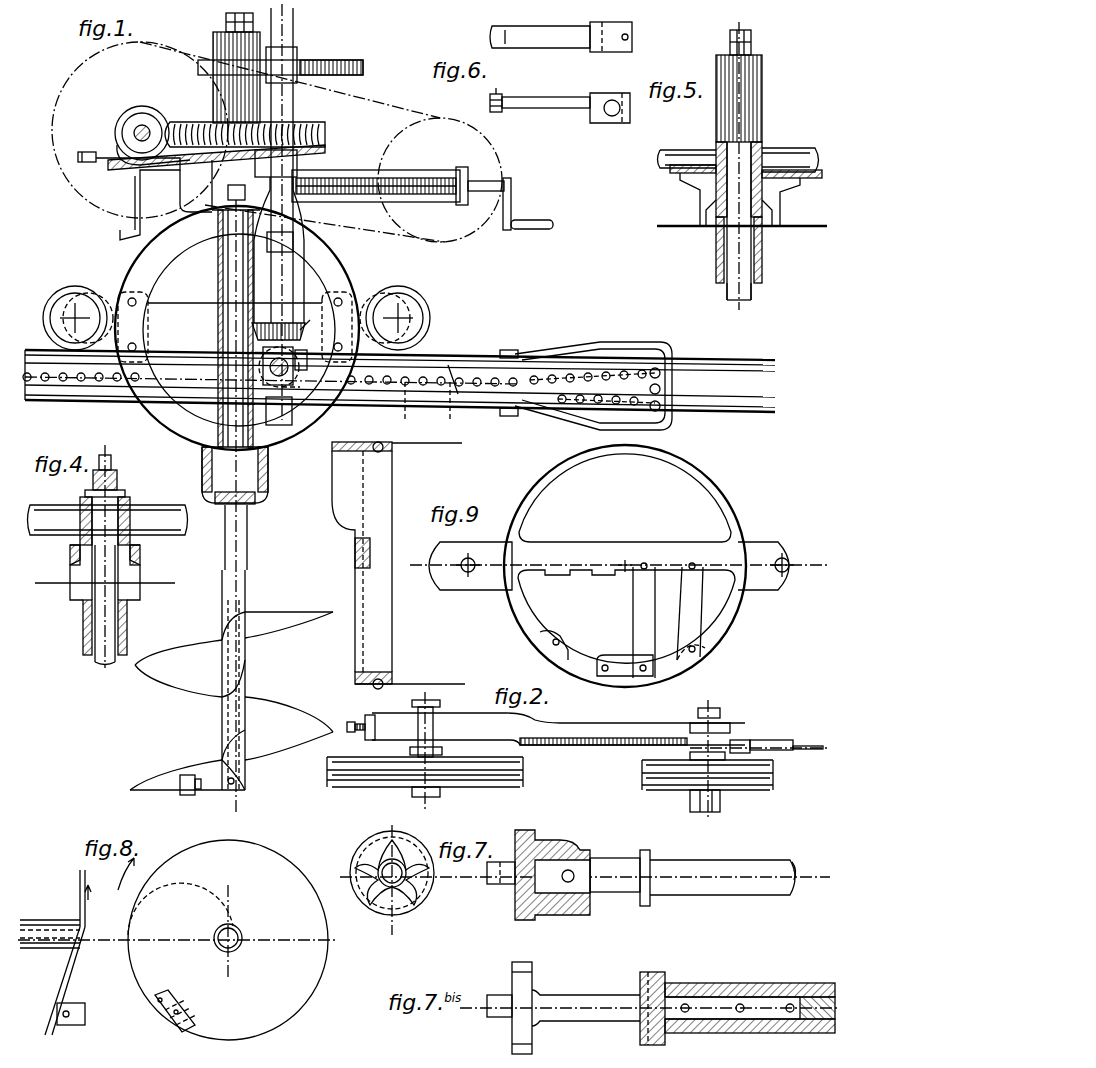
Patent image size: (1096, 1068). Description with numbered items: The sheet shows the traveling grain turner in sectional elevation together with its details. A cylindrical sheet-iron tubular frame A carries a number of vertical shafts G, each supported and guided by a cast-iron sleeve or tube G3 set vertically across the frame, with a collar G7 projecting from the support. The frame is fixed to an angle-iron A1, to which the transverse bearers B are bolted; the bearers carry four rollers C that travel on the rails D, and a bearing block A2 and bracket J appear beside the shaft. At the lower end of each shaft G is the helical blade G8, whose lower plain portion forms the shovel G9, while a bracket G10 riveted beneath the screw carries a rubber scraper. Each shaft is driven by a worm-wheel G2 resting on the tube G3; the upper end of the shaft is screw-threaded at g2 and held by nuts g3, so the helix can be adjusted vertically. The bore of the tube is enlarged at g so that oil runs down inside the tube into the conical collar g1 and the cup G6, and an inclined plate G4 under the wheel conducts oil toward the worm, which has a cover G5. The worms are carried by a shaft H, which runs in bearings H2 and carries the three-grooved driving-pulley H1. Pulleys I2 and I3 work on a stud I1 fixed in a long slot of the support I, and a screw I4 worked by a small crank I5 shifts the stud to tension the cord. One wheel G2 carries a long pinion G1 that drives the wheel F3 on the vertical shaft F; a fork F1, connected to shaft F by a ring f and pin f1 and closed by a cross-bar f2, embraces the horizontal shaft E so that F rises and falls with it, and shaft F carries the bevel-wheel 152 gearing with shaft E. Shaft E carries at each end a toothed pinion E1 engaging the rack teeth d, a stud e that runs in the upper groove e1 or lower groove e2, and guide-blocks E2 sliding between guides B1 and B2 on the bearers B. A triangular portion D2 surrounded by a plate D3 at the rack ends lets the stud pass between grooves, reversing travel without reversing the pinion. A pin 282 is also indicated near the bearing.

In FIG. 1, the tubular frame A is at (237, 328).
In FIG. 5, the tubular frame A is at (742, 217).
In FIG. 9, the tubular frame A is at (398, 565).
In FIG. 1, the angle-iron A1 is at (235, 305).
In FIG. 9, the angle-iron A1 is at (362, 561).
In FIG. 1, the bearing block A2 is at (291, 411).
In FIG. 1, the transverse bars or bearers B is at (270, 330).
In FIG. 9, the transverse bars or bearers B is at (355, 560).
In FIG. 9, the guide B1 is at (644, 620).
In FIG. 9, the guide B2 is at (690, 611).
In FIG. 1, the rollers C is at (236, 310).
In FIG. 1, the rails D is at (399, 371).
In FIG. 1, the triangular portion D2 is at (595, 389).
In FIG. 1, the plate D3 is at (593, 376).
In FIG. 1, the rack teeth d is at (428, 408).
In FIG. 7, the horizontal shaft E is at (679, 873).
In FIG. 7bis, the horizontal shaft E is at (750, 995).
In FIG. 1, the toothed pinion E1 is at (305, 362).
In FIG. 7, the toothed pinion E1 is at (470, 866).
In FIG. 7bis, the toothed pinion E1 is at (576, 996).
In FIG. 7bis, the guide-blocks E2 is at (653, 996).
In FIG. 7, the stud or pin e is at (495, 880).
In FIG. 7bis, the stud or pin e is at (487, 1018).
In FIG. 1, the upper groove e1 is at (480, 362).
In FIG. 1, the lower groove e2 is at (490, 410).
In FIG. 1, the vertical shaft F is at (281, 212).
In FIG. 1, the pin or fork F1 is at (320, 342).
In FIG. 6, the pin or fork F1 is at (561, 72).
In FIG. 1, the wheel F3 is at (289, 72).
In FIG. 6, the ring f is at (500, 82).
In FIG. 6, the pin f1 is at (490, 103).
In FIG. 6, the cross-bar f2 is at (628, 37).
In FIG. 1, the vertical shaft G is at (234, 506).
In FIG. 5, the vertical shaft G is at (739, 278).
In FIG. 8, the vertical shaft G is at (234, 942).
In FIG. 1, the long pinion G1 is at (228, 68).
In FIG. 5, the long pinion G1 is at (752, 86).
In FIG. 1, the worm-wheel G2 is at (245, 126).
In FIG. 4, the worm-wheel G2 is at (108, 543).
In FIG. 5, the worm-wheel G2 is at (738, 210).
In FIG. 1, the sleeve or tube G3 is at (222, 278).
In FIG. 4, the sleeve or tube G3 is at (114, 605).
In FIG. 5, the sleeve or tube G3 is at (746, 250).
In FIG. 1, the plate G4 is at (228, 154).
In FIG. 5, the plate G4 is at (746, 195).
In FIG. 1, the cover G5 is at (152, 123).
In FIG. 1, the cup G6 is at (266, 492).
In FIG. 1, the collar G7 is at (268, 462).
In FIG. 1, the helical blade G8 is at (258, 610).
In FIG. 8, the helical blade G8 is at (45, 1035).
In FIG. 8, the shovel G9 is at (126, 909).
In FIG. 1, the bracket G10 is at (188, 795).
In FIG. 8, the bracket G10 is at (141, 1011).
In FIG. 4, the enlarged bore g is at (105, 576).
In FIG. 5, the enlarged bore g is at (716, 206).
In FIG. 1, the collar g1 is at (202, 464).
In FIG. 4, the screw-thread g2 is at (112, 462).
In FIG. 4, the nuts g3 is at (93, 486).
In FIG. 2, the worm-shaft H is at (426, 751).
In FIG. 1, the driving-pulley H1 is at (276, 142).
In FIG. 2, the driving-pulley H1 is at (425, 782).
In FIG. 1, the bearings H2 is at (140, 128).
In FIG. 2, the support I is at (482, 722).
In FIG. 1, the stud I1 is at (454, 379).
In FIG. 2, the stud I1 is at (710, 763).
In FIG. 2, the pulley I2 is at (775, 790).
In FIG. 2, the pulley I3 is at (741, 758).
In FIG. 1, the screw I4 is at (398, 181).
In FIG. 2, the screw I4 is at (603, 746).
In FIG. 1, the crank I5 is at (528, 204).
In FIG. 2, the crank I5 is at (788, 736).
In FIG. 1, the frame bracket J is at (169, 196).
In FIG. 1, the bevel-wheel 152 is at (317, 321).
In FIG. 1, the pin 282 is at (300, 387).